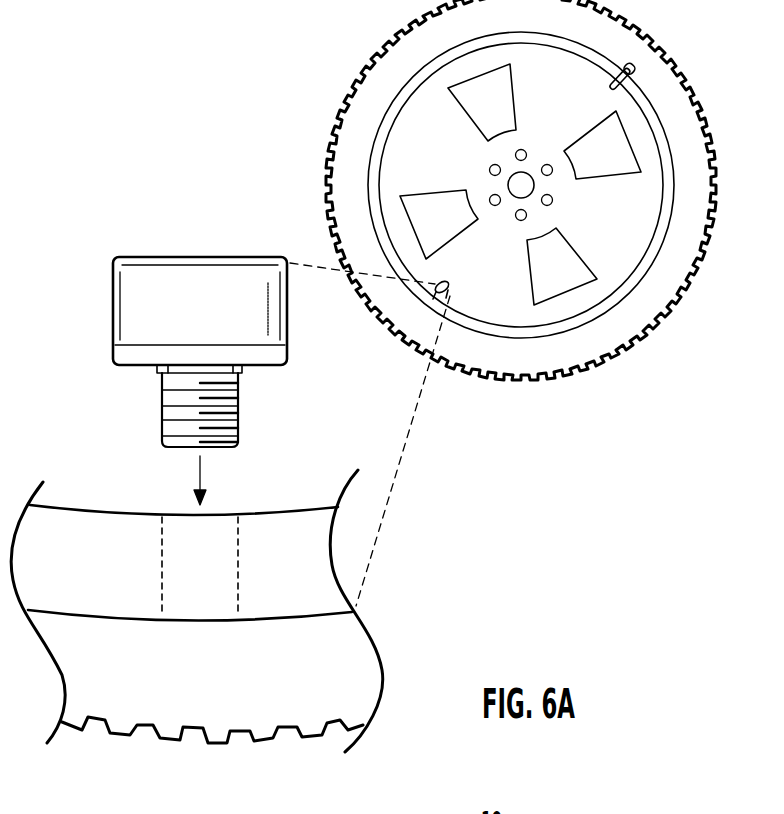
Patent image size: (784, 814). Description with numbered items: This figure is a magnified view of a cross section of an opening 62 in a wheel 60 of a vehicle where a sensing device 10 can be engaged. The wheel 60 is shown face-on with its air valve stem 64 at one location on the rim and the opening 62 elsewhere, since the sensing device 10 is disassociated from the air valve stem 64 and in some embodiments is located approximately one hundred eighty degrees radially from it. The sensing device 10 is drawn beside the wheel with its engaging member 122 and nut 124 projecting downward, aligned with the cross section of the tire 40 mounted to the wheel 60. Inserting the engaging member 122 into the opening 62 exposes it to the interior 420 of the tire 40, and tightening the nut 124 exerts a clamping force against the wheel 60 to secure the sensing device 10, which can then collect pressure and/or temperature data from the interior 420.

The sensing device 10 is at (145, 257).
The tire 40 is at (678, 268).
The wheel 60 is at (517, 315).
The opening 62 is at (432, 296).
The air valve stem 64 is at (640, 83).
The engaging member 122 is at (238, 401).
The nut 124 is at (243, 370).
The interior 420 is at (368, 683).